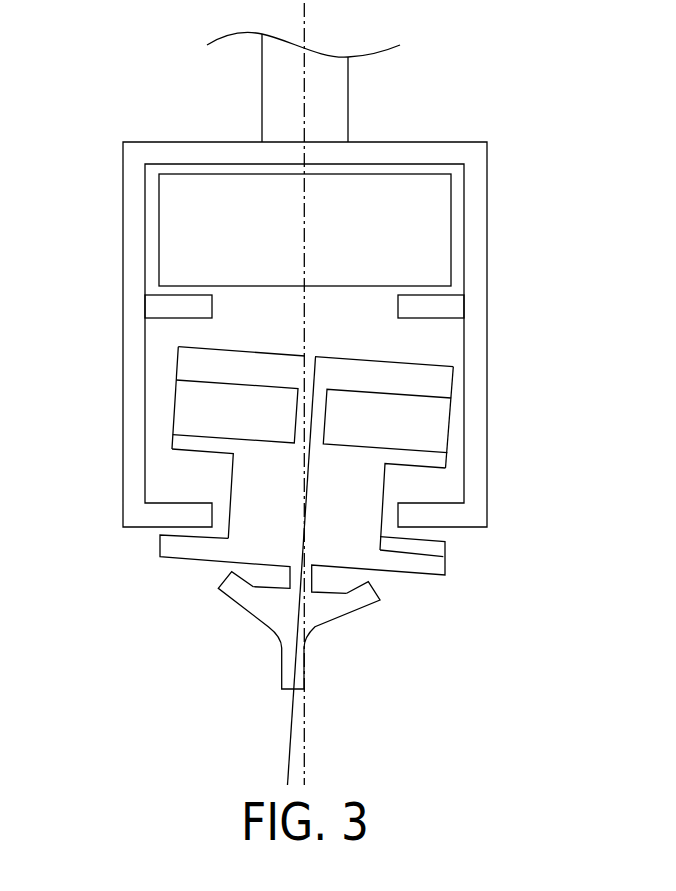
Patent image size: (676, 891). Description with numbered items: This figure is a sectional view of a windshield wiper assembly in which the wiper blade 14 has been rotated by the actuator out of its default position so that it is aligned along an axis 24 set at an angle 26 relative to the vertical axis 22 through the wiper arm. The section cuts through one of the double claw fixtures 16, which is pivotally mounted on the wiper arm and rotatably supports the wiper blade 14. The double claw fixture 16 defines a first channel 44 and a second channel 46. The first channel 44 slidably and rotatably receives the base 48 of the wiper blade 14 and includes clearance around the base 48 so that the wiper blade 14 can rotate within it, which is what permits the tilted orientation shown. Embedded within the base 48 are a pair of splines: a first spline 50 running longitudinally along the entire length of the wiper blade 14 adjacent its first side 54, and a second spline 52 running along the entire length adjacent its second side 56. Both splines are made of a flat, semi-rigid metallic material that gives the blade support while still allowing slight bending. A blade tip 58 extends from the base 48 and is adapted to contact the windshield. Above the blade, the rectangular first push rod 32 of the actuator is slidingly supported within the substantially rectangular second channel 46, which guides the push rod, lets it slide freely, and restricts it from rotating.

The wiper blade 14 is at (446, 541).
The double claw fixture 16 is at (388, 150).
The vertical axis 22 is at (305, 730).
The axis 24 is at (290, 745).
The angle 26 is at (288, 778).
The first push rod 32 is at (431, 230).
The first channel 44 is at (145, 385).
The second channel 46 is at (145, 247).
The base 48 is at (437, 382).
The first spline 50 is at (192, 421).
The second spline 52 is at (433, 425).
The first side 54 is at (175, 408).
The second side 56 is at (445, 460).
The blade tip 58 is at (280, 672).